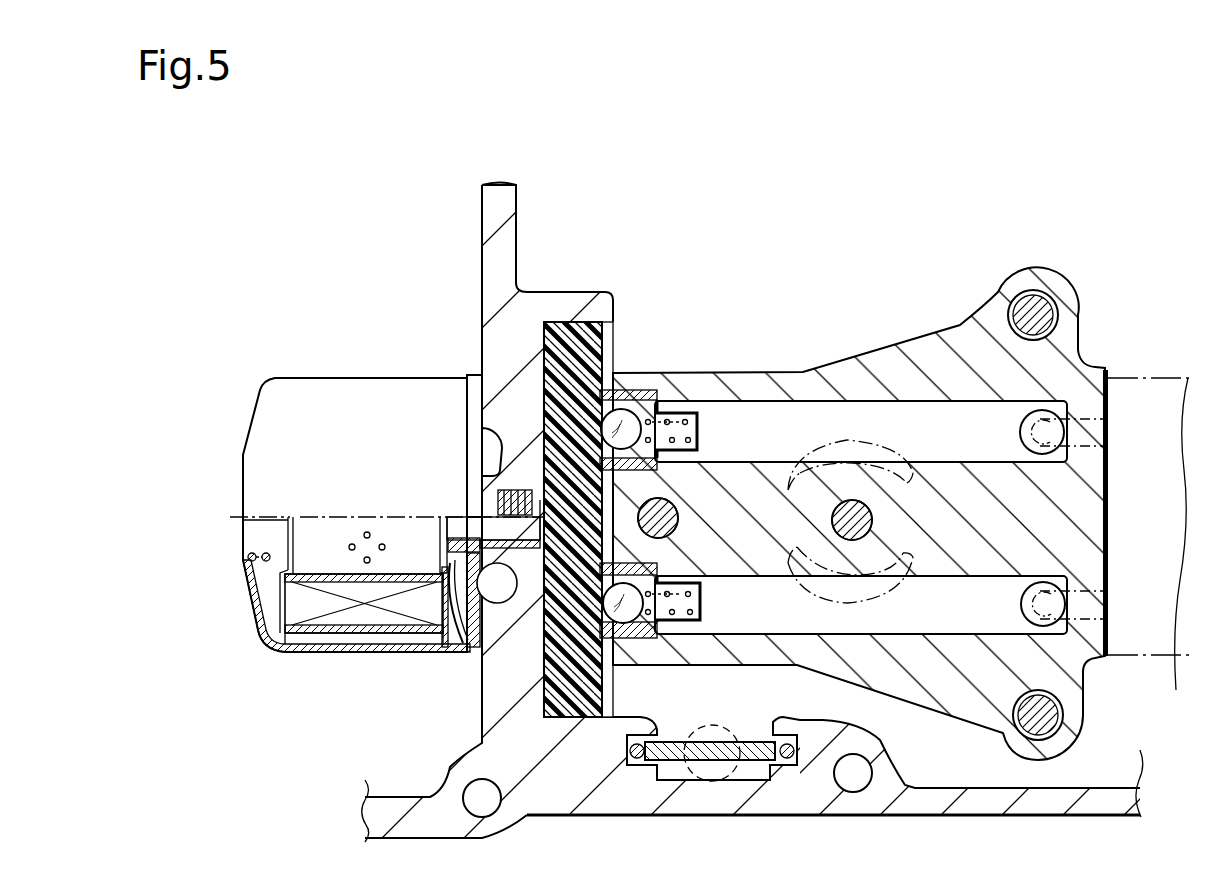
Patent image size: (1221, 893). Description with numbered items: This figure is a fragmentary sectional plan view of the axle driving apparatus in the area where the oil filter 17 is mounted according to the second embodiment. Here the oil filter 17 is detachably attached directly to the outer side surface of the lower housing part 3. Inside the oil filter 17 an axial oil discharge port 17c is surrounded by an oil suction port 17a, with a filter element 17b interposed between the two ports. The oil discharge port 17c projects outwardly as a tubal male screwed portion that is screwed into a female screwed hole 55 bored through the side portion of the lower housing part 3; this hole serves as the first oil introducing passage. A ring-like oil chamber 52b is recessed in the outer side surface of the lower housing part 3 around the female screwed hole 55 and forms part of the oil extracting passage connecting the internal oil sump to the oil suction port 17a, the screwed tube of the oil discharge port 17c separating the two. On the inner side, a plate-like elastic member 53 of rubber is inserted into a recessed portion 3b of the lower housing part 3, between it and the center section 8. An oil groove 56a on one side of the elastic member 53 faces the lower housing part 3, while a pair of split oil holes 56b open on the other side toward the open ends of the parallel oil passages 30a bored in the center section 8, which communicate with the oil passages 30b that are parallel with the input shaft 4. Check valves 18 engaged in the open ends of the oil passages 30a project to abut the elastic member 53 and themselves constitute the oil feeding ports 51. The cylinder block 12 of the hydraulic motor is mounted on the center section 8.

The lower housing part 3 is at (482, 205).
The recessed portion 3b is at (612, 340).
The input shaft 4 is at (873, 522).
The center section 8 is at (845, 358).
The cylinder block 12 is at (1170, 373).
The oil filter 17 is at (393, 490).
The oil suction port 17a is at (447, 640).
The filter element 17b is at (342, 634).
The oil discharge port 17c is at (493, 525).
The check valve 18 is at (640, 395).
The oil passage 30a is at (918, 416).
The oil passage 30b is at (1025, 436).
The oil feeding port 51 is at (663, 380).
The oil chamber 52b is at (497, 657).
The elastic member 53 is at (543, 351).
The female screwed hole 55 is at (530, 552).
The oil groove 56a is at (545, 720).
The split oil hole 56b is at (547, 400).